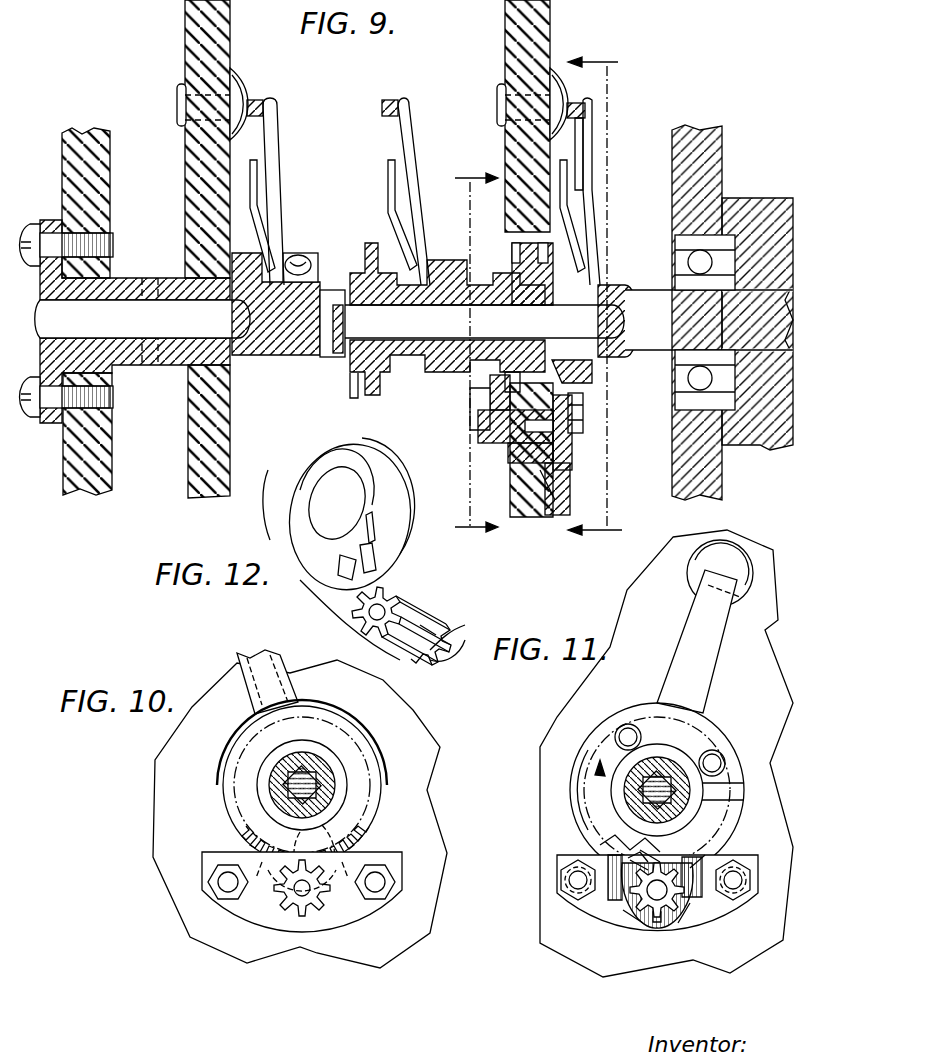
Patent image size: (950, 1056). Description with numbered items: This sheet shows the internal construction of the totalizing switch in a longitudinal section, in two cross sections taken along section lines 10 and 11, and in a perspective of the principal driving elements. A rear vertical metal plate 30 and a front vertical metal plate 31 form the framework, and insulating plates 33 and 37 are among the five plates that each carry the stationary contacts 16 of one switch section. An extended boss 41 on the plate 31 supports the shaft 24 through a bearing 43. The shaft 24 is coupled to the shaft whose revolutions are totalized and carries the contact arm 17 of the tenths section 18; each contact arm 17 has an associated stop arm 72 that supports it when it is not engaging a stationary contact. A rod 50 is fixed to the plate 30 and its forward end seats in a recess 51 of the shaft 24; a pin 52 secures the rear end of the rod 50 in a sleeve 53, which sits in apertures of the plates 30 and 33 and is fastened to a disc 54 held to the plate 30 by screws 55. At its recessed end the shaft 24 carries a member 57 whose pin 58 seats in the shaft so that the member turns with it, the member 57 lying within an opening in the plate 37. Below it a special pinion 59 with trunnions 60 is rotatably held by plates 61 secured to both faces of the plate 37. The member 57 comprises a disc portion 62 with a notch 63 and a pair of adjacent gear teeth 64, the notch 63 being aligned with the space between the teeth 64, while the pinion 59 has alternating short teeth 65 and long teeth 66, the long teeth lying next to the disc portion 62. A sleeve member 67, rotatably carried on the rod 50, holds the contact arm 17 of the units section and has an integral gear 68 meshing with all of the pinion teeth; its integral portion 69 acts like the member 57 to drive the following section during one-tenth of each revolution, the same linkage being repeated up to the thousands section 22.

In FIG. 9, the section line 10— 10 is at (460, 354).
In FIG. 9, the section line 11— 11 is at (611, 297).
In FIG. 9, the stationary contacts 16 is at (240, 80).
In FIG. 11, the stationary contacts 16 is at (735, 560).
In FIG. 9, the contact arm 17 is at (278, 136).
In FIG. 10, the contact arm 17 is at (258, 650).
In FIG. 11, the contact arm 17 is at (705, 683).
In FIG. 9, the tenths section 18 is at (572, 140).
In FIG. 9, the thousands section 22 is at (258, 155).
In FIG. 9, the shaft 24 is at (648, 300).
In FIG. 11, the shaft 24 is at (690, 790).
In FIG. 9, the vertical metal plate 30 is at (82, 140).
In FIG. 9, the vertical metal plate 31 is at (700, 135).
In FIG. 9, the insulating plate 33 is at (195, 18).
In FIG. 9, the insulating plate 37 is at (548, 18).
In FIG. 10, the insulating plate 37 is at (405, 722).
In FIG. 11, the insulating plate 37 is at (640, 590).
In FIG. 9, the extended boss 41 is at (770, 210).
In FIG. 9, the bearing 43 is at (676, 385).
In FIG. 9, the rod 50 is at (232, 325).
In FIG. 10, the rod 50 is at (290, 785).
In FIG. 11, the rod 50 is at (645, 788).
In FIG. 9, the recess 51 is at (600, 290).
In FIG. 9, the pin 52 is at (148, 358).
In FIG. 9, the sleeve 53 is at (125, 283).
In FIG. 9, the disc 54 is at (45, 225).
In FIG. 9, the screws 55 is at (92, 238).
In FIG. 9, the member 57 is at (528, 262).
In FIG. 12, the member 57 is at (365, 448).
In FIG. 9, the pin 58 is at (594, 372).
In FIG. 9, the pinion 59 is at (572, 455).
In FIG. 12, the pinion 59 is at (440, 622).
In FIG. 10, the pinion 59 is at (285, 928).
In FIG. 11, the pinion 59 is at (640, 925).
In FIG. 9, the trunnions 60 is at (480, 428).
In FIG. 12, the trunnions 60 is at (352, 614).
In FIG. 10, the trunnions 60 is at (305, 895).
In FIG. 11, the trunnions 60 is at (660, 900).
In FIG. 9, the plates 61 is at (566, 480).
In FIG. 10, the plates 61 is at (355, 918).
In FIG. 11, the plates 61 is at (720, 912).
In FIG. 9, the disc portion 62 is at (474, 410).
In FIG. 12, the disc portion 62 is at (405, 515).
In FIG. 10, the disc portion 62 is at (335, 850).
In FIG. 11, the disc portion 62 is at (703, 870).
In FIG. 12, the notch 63 is at (380, 568).
In FIG. 11, the notch 63 is at (632, 860).
In FIG. 9, the gear teeth 64 is at (506, 378).
In FIG. 12, the gear teeth 64 is at (348, 580).
In FIG. 11, the gear teeth 64 is at (602, 843).
In FIG. 9, the short teeth 65 is at (527, 428).
In FIG. 12, the short teeth 65 is at (422, 625).
In FIG. 11, the short teeth 65 is at (700, 850).
In FIG. 9, the long teeth 66 is at (556, 485).
In FIG. 12, the long teeth 66 is at (466, 612).
In FIG. 11, the long teeth 66 is at (625, 913).
In FIG. 9, the sleeve member 67 is at (440, 272).
In FIG. 10, the sleeve member 67 is at (270, 800).
In FIG. 9, the gear 68 is at (492, 385).
In FIG. 10, the gear 68 is at (365, 805).
In FIG. 9, the integral portion 69 is at (356, 382).
In FIG. 9, the stop arm 72 is at (255, 188).